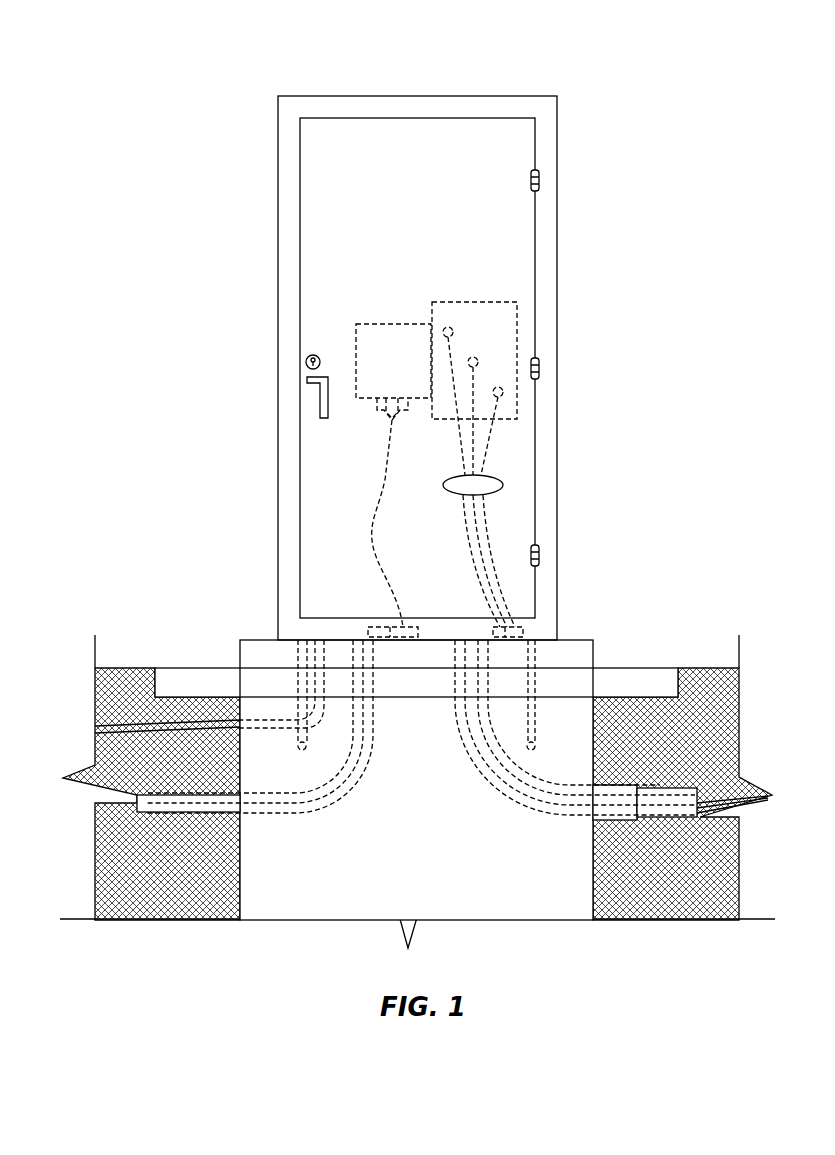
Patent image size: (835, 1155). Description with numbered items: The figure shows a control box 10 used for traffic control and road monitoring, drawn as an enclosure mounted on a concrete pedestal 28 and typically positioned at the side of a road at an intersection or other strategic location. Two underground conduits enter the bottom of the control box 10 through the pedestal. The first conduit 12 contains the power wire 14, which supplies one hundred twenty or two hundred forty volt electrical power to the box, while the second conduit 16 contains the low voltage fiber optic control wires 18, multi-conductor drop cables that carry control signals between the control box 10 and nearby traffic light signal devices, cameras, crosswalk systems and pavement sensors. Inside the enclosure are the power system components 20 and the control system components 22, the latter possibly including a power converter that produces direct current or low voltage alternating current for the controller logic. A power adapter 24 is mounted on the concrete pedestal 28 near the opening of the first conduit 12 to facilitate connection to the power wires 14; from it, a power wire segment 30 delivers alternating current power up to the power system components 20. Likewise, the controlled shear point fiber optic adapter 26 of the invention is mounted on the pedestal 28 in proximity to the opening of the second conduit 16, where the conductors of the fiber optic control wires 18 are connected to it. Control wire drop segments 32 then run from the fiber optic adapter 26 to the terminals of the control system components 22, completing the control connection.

The control box 10 is at (678, 80).
The first conduit 12 is at (207, 795).
The power wire 14 is at (122, 803).
The second conduit 16 is at (647, 785).
The fiber optic control wires 18 is at (717, 817).
The power system components 20 is at (390, 324).
The control system components 22 is at (473, 302).
The power adapter 24 is at (395, 627).
The controlled shear point fiber optic adapter 26 is at (525, 632).
The concrete pedestal 28 is at (240, 642).
The power wire segment 30 is at (385, 480).
The control wire drop segments 32 is at (493, 480).